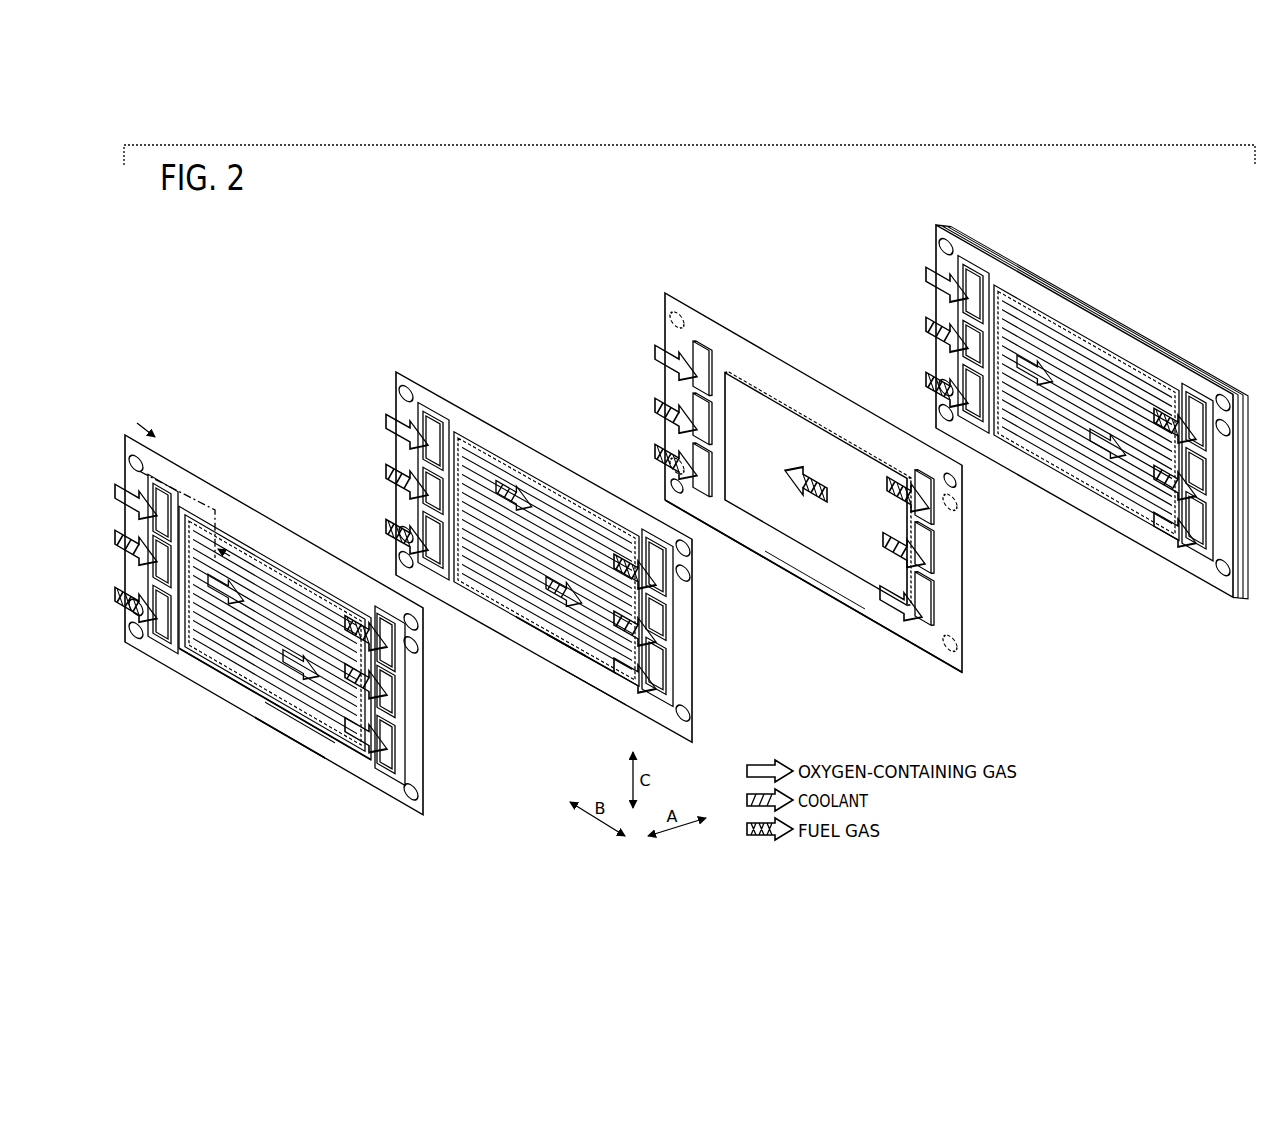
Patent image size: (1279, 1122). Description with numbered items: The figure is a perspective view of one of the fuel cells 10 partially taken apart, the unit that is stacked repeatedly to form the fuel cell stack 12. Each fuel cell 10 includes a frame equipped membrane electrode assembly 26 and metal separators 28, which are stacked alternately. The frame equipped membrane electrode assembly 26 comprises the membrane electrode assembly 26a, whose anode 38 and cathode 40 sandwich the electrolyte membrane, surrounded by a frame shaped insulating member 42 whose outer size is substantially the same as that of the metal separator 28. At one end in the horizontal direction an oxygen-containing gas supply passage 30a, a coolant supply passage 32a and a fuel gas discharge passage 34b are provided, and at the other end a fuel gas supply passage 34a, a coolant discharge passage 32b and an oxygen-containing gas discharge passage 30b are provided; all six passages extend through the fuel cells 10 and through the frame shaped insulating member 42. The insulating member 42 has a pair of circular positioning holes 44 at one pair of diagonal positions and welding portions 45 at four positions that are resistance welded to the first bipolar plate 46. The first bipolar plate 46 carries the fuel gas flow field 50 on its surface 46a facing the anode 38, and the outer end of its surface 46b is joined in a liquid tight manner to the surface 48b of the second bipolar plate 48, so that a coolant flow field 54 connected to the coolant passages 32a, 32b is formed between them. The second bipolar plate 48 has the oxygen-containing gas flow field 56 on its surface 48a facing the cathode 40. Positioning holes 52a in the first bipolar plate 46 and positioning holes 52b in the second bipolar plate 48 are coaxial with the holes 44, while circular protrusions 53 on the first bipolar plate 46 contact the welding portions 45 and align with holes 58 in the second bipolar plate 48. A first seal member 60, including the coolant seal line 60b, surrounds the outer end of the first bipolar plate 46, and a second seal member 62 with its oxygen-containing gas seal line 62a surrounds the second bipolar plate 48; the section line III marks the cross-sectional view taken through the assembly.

The fuel cell 10 is at (323, 281).
The fuel cell stack 12 is at (215, 240).
The frame equipped membrane electrode assembly 26 is at (663, 291).
The membrane electrode assembly 26a is at (825, 541).
The metal separator 28 is at (123, 384).
The oxygen-containing gas supply passage 30a is at (163, 503).
The oxygen-containing gas discharge passage 30b is at (386, 736).
The coolant supply passage 32a is at (175, 540).
The coolant discharge passage 32b is at (389, 691).
The fuel gas supply passage 34a is at (391, 651).
The fuel gas discharge passage 34b is at (164, 625).
The anode 38 is at (780, 418).
The cathode 40 is at (808, 412).
The frame shaped insulating member 42 is at (822, 583).
The positioning hole 44 is at (670, 486).
The welding portion 45 is at (679, 317).
The first bipolar plate 46 is at (397, 370).
The surface of first bipolar plate 46a is at (582, 666).
The surface of first bipolar plate 46b is at (572, 664).
The second bipolar plate 48 is at (128, 433).
The surface of second bipolar plate 48a is at (263, 713).
The surface of second bipolar plate 48b is at (273, 717).
The fuel gas flow field 50 is at (535, 601).
The positioning hole 52a is at (400, 557).
The positioning hole 52b is at (138, 638).
The protrusion 53 is at (400, 392).
The coolant flow field 54 is at (518, 596).
The oxygen-containing gas flow field 56 is at (235, 658).
The hole 58 is at (143, 467).
The first seal member 60 is at (465, 420).
The coolant seal line 60b is at (510, 455).
The second seal member 62 is at (190, 668).
The oxygen-containing gas seal line 62a is at (201, 666).
The section line III is at (194, 492).